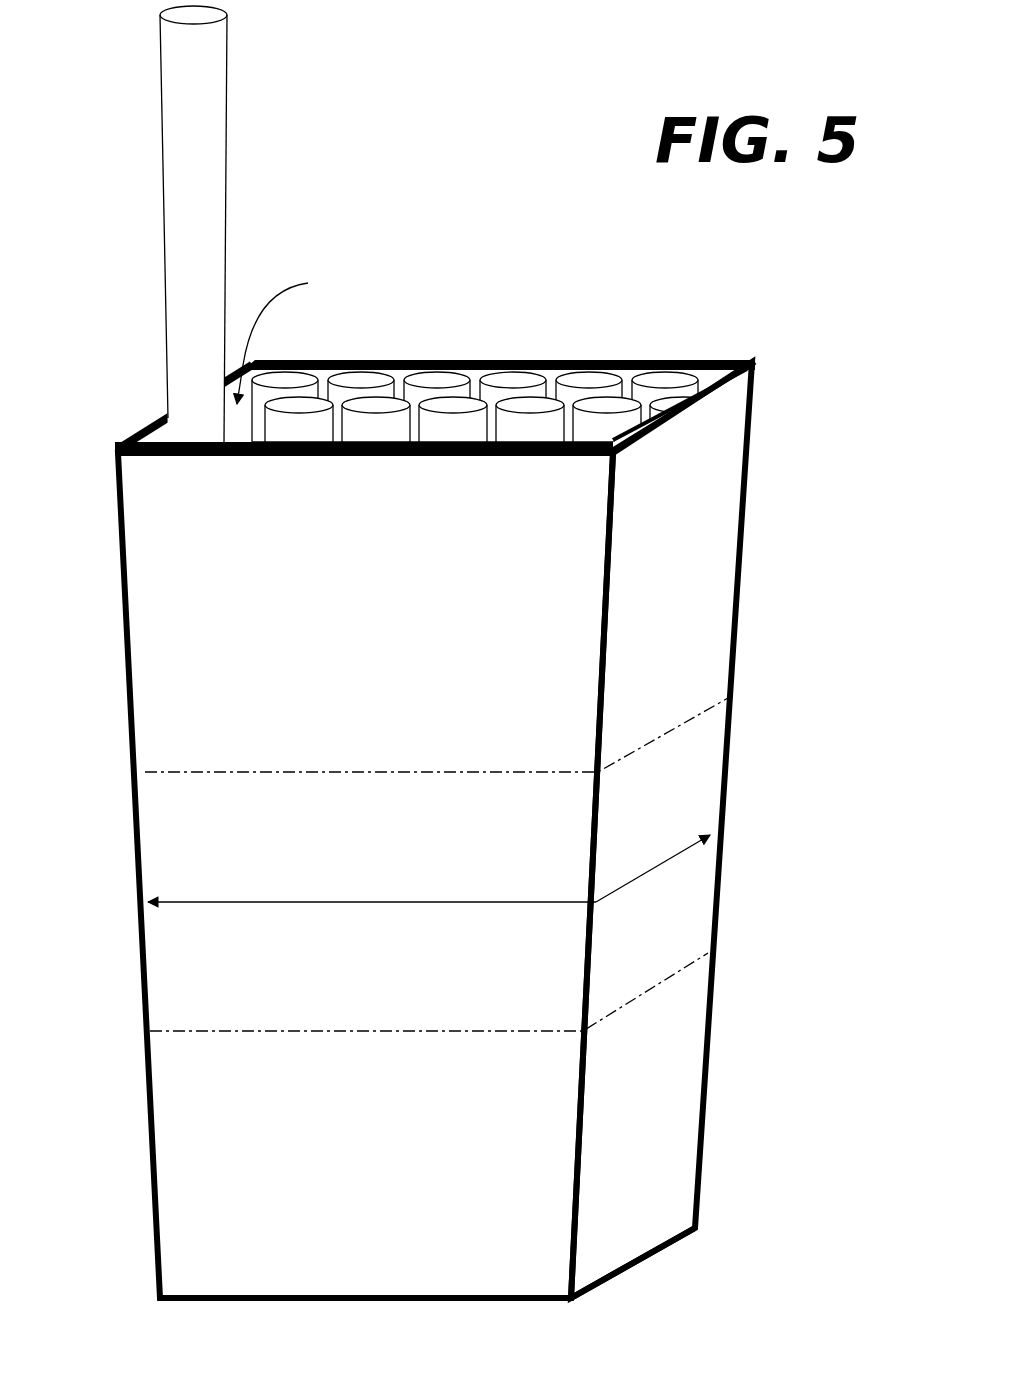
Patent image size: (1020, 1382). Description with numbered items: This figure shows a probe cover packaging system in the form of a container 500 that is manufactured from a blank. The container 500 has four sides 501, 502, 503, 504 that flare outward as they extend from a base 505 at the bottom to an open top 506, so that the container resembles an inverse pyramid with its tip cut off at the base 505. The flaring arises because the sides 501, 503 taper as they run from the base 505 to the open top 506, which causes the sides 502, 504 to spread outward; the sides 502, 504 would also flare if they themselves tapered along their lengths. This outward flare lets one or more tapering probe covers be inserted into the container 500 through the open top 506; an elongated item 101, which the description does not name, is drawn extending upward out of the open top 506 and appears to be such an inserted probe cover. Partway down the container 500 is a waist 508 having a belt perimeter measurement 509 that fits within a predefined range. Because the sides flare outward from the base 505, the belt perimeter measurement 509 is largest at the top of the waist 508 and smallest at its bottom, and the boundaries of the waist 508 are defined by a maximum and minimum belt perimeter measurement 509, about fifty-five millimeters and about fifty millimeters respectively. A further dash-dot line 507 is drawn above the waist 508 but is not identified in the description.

The rod 101 is at (205, 130).
The container 500 is at (472, 853).
The side 501 is at (183, 1072).
The side 502 is at (678, 543).
The side 503 is at (515, 360).
The side 504 is at (142, 427).
The base 505 is at (618, 1273).
The open top 506 is at (299, 337).
The upper section line 507 is at (318, 772).
The waist 508 is at (323, 1033).
The belt perimeter measurement 509 is at (323, 902).